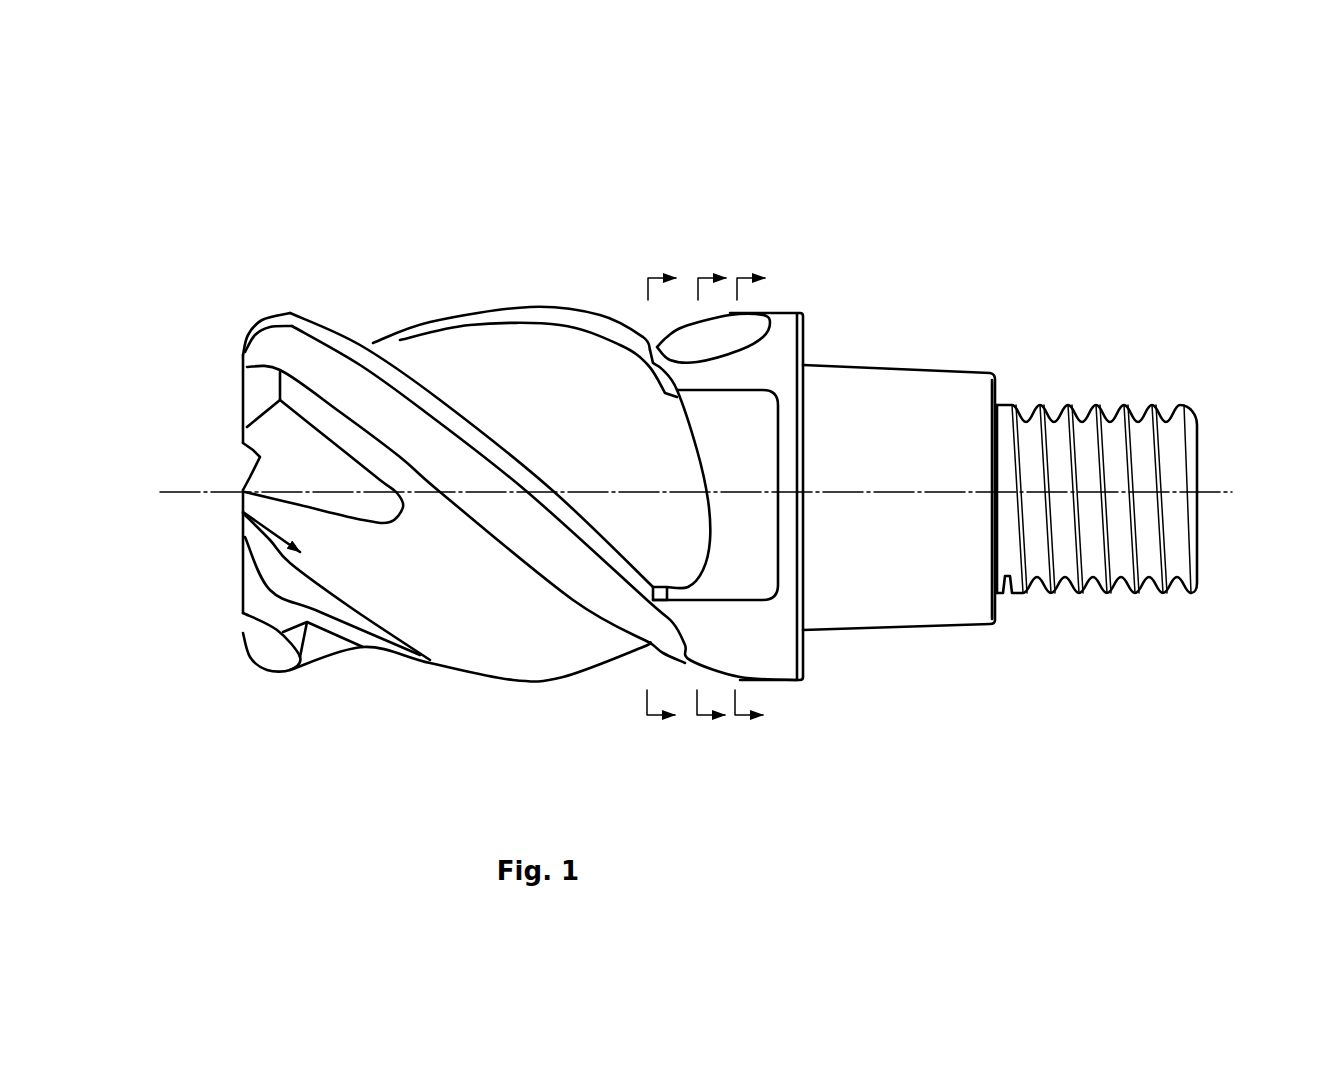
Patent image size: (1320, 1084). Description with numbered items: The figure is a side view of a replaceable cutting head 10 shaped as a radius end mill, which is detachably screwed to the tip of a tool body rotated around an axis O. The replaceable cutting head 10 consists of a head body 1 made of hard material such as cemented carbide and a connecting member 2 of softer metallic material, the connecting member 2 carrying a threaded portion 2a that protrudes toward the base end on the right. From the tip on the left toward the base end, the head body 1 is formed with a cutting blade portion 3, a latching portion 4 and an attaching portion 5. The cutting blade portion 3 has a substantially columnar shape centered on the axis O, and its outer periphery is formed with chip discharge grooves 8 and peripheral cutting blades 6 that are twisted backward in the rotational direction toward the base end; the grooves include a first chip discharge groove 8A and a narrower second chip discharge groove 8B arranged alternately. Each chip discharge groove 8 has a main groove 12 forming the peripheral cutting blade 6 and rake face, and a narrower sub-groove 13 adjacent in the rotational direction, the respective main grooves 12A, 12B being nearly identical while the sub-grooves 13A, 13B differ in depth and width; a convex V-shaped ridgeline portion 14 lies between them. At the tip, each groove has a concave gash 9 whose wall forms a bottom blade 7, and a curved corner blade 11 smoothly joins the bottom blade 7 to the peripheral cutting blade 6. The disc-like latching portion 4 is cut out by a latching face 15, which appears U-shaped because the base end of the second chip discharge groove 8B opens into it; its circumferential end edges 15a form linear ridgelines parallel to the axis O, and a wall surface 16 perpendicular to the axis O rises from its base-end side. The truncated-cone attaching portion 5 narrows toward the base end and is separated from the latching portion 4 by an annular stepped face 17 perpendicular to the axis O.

The head body 1 is at (671, 190).
The connecting member 2 is at (1093, 330).
The threaded portion 2a is at (1130, 410).
The cutting blade portion 3 is at (297, 280).
The latching portion 4 is at (790, 312).
The attaching portion 5 is at (922, 367).
The peripheral cutting blade 6 is at (322, 322).
The bottom blade 7 is at (243, 387).
The chip discharge groove 8 is at (461, 487).
The first chip discharge groove 8A is at (440, 603).
The second chip discharge groove 8B is at (467, 360).
The gash 9 is at (288, 442).
The replaceable cutting head 10 is at (1043, 173).
The corner blade 11 is at (257, 320).
The main groove 12 is at (399, 501).
The main groove of the first chip discharge groove 12A is at (513, 625).
The main groove of the second chip discharge groove 12B is at (423, 352).
The sub-groove 13 is at (590, 509).
The sub-groove of the first chip discharge groove 13A is at (583, 577).
The sub-groove of the second chip discharge groove 13B is at (542, 333).
The ridgeline portion 14 is at (500, 317).
The latching face 15 is at (753, 450).
The end edge 15a is at (745, 390).
The wall surface 16 is at (777, 530).
The annular stepped face 17 is at (805, 340).
The axis O is at (1232, 493).